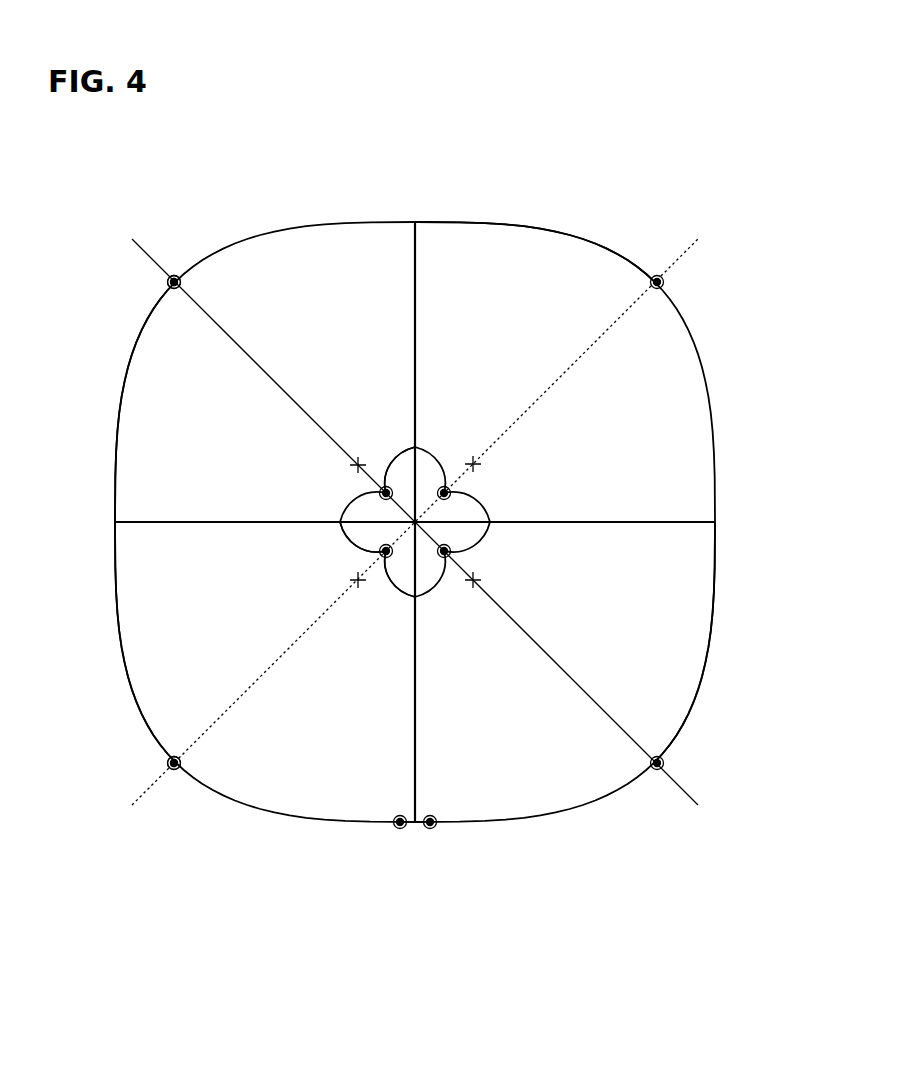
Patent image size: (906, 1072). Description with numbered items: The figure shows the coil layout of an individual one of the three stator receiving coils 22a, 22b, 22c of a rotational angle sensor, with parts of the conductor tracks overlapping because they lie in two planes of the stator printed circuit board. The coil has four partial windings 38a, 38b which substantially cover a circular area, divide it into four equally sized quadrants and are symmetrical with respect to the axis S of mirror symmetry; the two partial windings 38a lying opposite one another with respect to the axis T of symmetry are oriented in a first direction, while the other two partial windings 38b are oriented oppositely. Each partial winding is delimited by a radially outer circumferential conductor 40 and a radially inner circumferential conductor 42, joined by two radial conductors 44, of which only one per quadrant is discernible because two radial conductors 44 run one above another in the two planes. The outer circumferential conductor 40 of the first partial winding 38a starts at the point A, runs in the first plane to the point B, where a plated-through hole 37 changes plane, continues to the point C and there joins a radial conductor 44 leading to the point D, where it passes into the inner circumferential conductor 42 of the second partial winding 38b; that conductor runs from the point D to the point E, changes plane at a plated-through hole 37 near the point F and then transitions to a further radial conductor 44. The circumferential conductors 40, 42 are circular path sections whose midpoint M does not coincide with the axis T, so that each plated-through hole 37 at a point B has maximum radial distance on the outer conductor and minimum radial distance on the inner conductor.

The first stator receiving coil 22a is at (412, 452).
The second stator receiving coil 22b is at (412, 452).
The third stator receiving coil 22c is at (531, 134).
The plated-through hole 37 is at (176, 276).
The first partial winding 38a is at (150, 406).
The second partial winding 38b is at (578, 246).
The radially outer circumferential conductor 40 is at (280, 230).
The radially inner circumferential conductor 42 is at (430, 467).
The radial conductor 44 is at (419, 312).
The point A is at (415, 218).
The point B is at (162, 285).
The point C is at (110, 522).
The point D is at (349, 492).
The point E is at (346, 549).
The point F is at (427, 606).
The midpoint M is at (358, 461).
The axis of mirror symmetry S is at (688, 796).
The axis of symmetry T is at (428, 522).